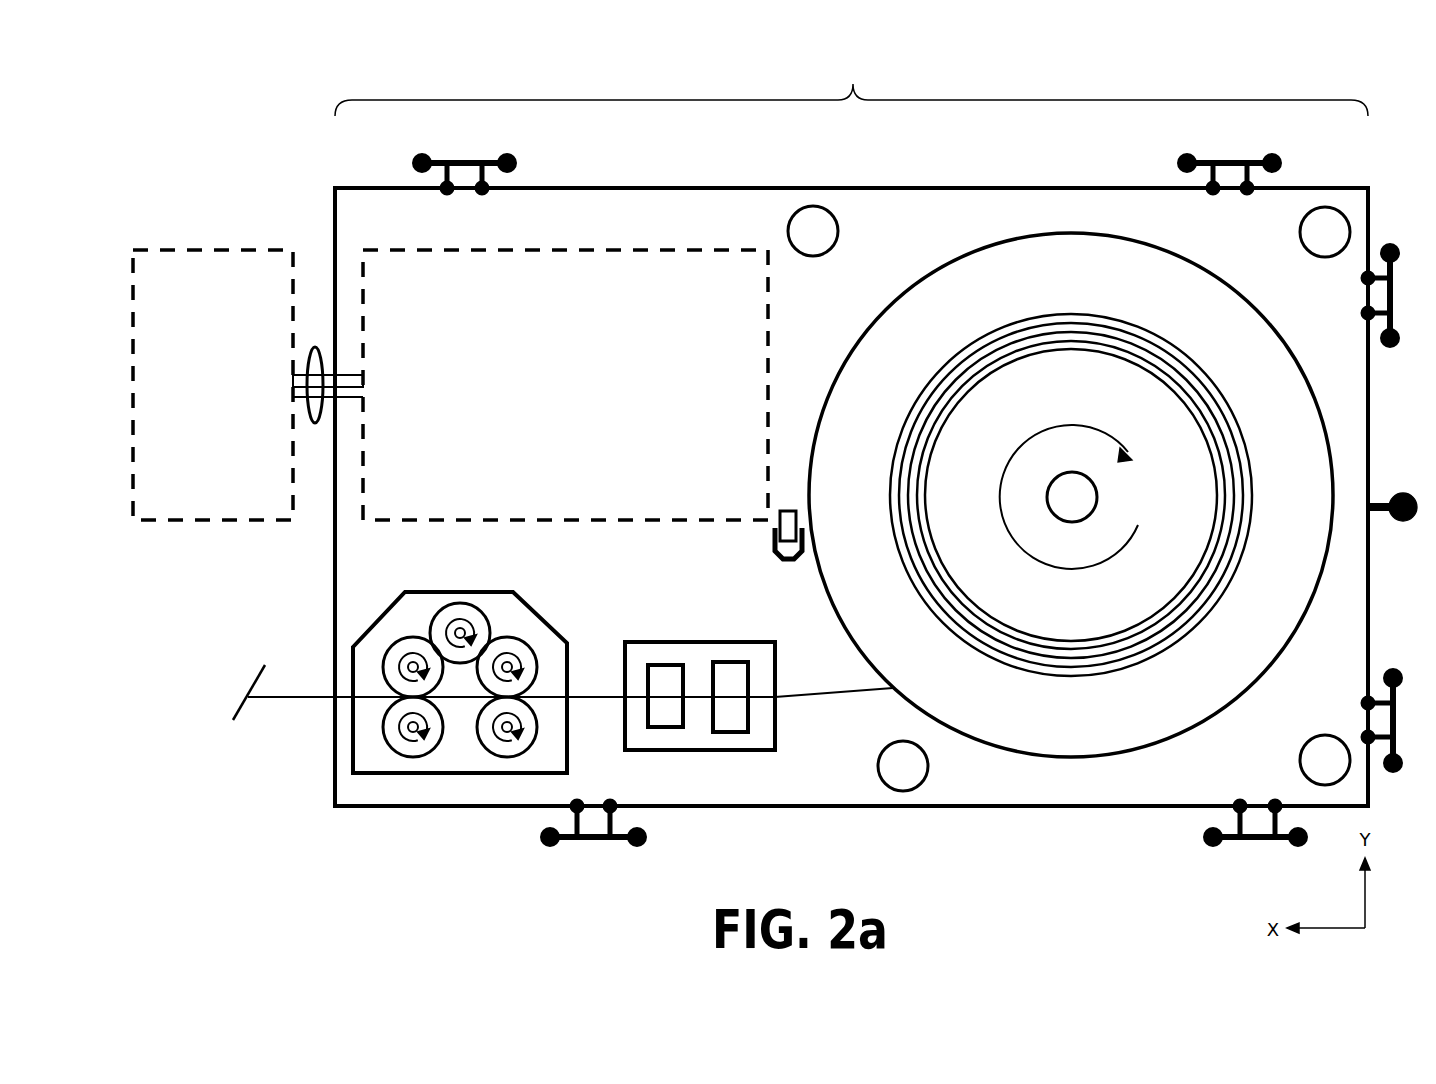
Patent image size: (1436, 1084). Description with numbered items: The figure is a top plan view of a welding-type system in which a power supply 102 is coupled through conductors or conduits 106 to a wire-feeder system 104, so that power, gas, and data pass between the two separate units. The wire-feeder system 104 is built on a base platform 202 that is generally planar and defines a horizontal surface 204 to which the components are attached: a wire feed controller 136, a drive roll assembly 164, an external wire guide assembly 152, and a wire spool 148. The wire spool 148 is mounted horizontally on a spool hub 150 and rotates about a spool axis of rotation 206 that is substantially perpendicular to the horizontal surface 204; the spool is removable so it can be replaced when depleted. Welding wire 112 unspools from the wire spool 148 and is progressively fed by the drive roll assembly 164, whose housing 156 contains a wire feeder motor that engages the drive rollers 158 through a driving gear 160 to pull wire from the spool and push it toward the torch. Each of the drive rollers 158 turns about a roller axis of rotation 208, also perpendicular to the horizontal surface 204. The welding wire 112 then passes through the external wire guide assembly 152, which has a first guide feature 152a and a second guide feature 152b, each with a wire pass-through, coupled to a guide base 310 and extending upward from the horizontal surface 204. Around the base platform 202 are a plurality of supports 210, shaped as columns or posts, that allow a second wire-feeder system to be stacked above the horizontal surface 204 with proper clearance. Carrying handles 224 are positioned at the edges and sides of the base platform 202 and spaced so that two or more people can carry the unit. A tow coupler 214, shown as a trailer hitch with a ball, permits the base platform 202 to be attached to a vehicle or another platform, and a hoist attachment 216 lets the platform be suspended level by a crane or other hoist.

The power supply 102 is at (207, 250).
The wire-feeder system 104 is at (851, 81).
The conductors or conduits 106 is at (313, 350).
The welding wire 112 is at (1215, 384).
The wire feed controller 136 is at (710, 250).
The wire spool 148 is at (1202, 268).
The spool hub 150 is at (1078, 474).
The external wire guide assembly 152 is at (658, 611).
The first guide feature 152a is at (730, 734).
The second guide feature 152b is at (665, 730).
The housing 156 is at (553, 628).
The drive rollers 158 is at (408, 640).
The driving gear 160 is at (458, 607).
The drive roll assembly 164 is at (383, 598).
The base platform 202 is at (1040, 188).
The horizontal surface 204 is at (912, 222).
The spool axis of rotation 206 is at (1088, 426).
The roller axis of rotation 208 is at (395, 658).
The supports 210 is at (815, 256).
The tow coupler 214 is at (1380, 494).
The hoist attachment 216 is at (770, 540).
The carrying handles 224 is at (463, 160).
The guide base 310 is at (700, 642).